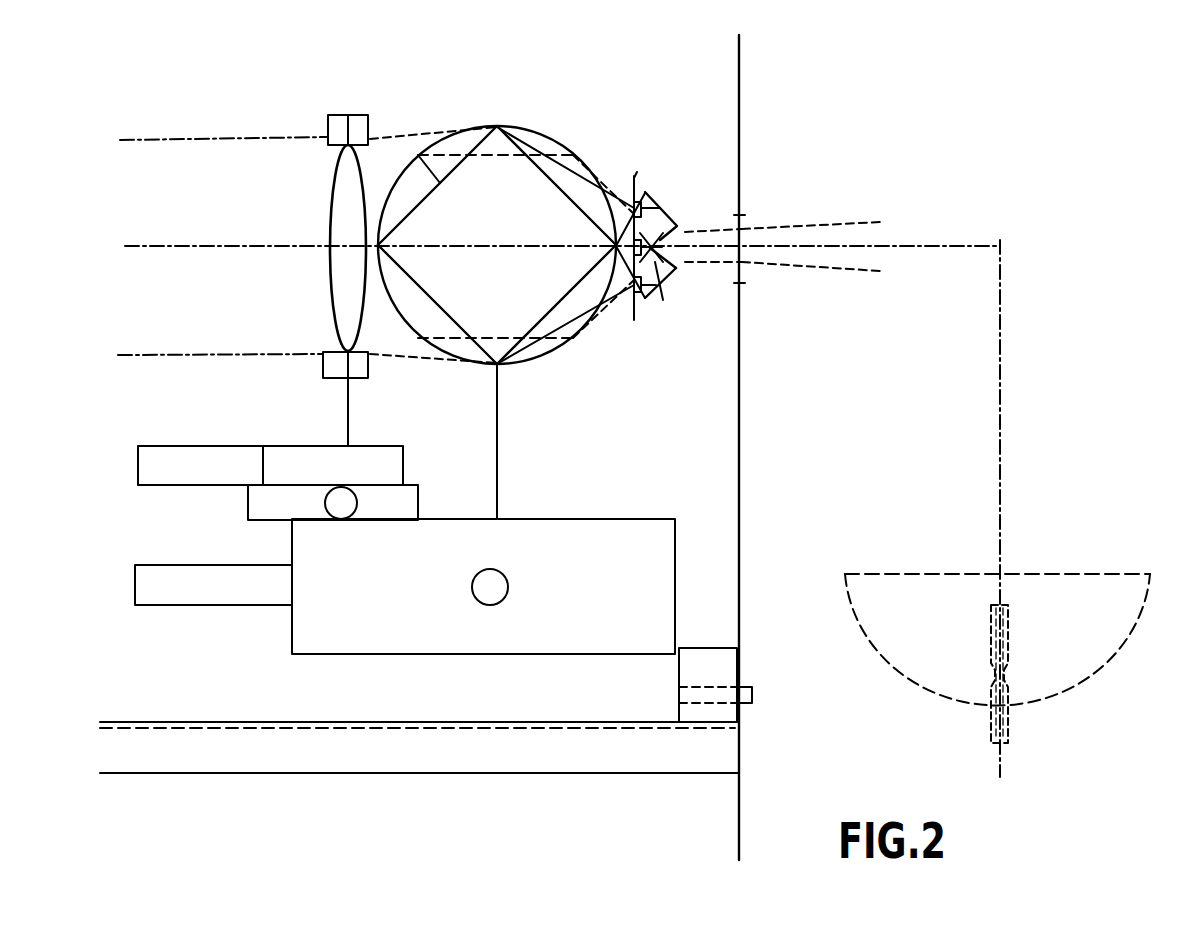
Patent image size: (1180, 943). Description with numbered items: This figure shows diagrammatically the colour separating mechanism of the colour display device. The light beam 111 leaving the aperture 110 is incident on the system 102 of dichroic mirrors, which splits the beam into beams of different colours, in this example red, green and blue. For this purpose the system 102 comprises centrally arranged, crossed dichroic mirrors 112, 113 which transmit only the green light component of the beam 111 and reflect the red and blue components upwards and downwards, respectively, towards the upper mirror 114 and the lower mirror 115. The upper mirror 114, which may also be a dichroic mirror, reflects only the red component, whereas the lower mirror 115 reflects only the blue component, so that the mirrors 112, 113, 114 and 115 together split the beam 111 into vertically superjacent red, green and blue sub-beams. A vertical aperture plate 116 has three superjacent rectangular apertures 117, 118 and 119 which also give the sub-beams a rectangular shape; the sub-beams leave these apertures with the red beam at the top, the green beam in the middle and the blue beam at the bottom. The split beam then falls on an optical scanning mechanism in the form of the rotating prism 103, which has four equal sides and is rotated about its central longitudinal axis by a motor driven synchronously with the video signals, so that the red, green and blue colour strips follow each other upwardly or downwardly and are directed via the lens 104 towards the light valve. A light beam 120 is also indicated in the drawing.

The system of dichroic mirrors 102 is at (670, 135).
The rotating prism 103 is at (452, 112).
The lens 104 is at (345, 108).
The aperture 110 is at (742, 220).
The light beam 111 is at (727, 230).
The dichroic mirror 112 is at (668, 252).
The dichroic mirror 113 is at (670, 272).
The upper mirror 114 is at (650, 198).
The lower mirror 115 is at (650, 295).
The vertical aperture plate 116 is at (636, 172).
The rectangular aperture 117 is at (634, 202).
The rectangular aperture 118 is at (661, 302).
The rectangular aperture 119 is at (640, 296).
The light beam 120 is at (418, 155).